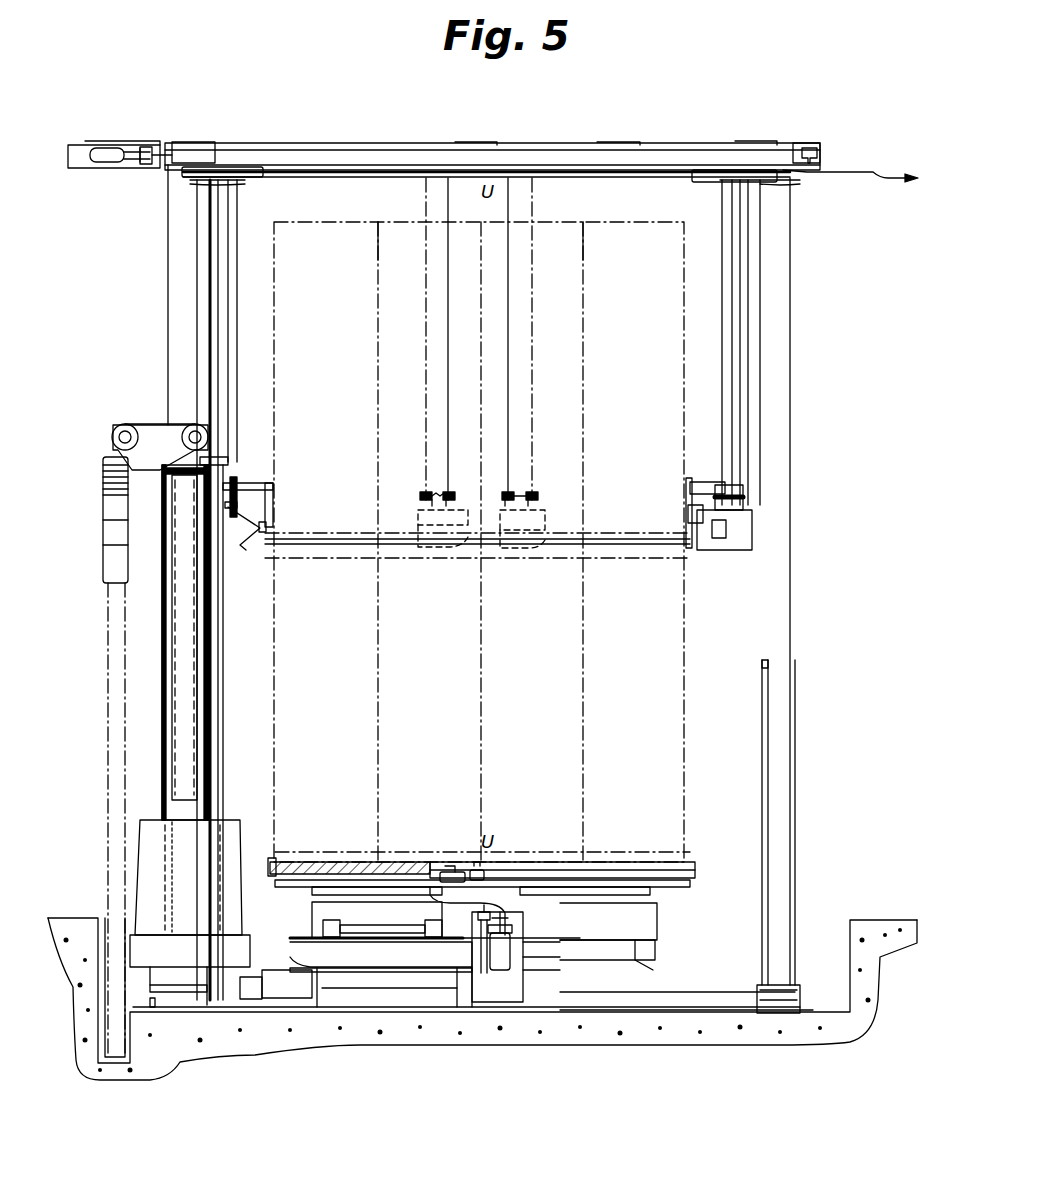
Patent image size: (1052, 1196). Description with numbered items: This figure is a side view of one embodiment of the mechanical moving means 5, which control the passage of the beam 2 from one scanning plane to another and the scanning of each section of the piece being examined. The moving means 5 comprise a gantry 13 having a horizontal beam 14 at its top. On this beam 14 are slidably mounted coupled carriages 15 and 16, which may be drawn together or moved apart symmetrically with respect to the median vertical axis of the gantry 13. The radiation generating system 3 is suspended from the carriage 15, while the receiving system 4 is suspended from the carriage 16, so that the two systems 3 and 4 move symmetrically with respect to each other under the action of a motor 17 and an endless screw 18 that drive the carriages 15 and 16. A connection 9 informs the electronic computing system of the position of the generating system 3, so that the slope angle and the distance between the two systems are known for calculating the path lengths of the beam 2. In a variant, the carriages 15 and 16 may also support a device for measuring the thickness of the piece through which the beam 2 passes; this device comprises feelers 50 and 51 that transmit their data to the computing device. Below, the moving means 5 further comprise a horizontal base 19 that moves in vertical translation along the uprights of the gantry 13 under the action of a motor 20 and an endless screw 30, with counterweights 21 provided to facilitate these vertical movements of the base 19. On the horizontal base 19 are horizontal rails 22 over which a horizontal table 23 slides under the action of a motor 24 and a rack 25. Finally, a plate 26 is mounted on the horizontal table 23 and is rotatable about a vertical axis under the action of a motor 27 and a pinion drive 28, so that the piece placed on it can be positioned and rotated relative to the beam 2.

The beam 2 is at (337, 537).
The radiation generating system 3 is at (250, 552).
The receiving system 4 is at (736, 547).
The mechanical moving means 5 is at (146, 340).
The connection 9 is at (893, 176).
The gantry 13 is at (178, 392).
The horizontal beam 14 is at (388, 160).
The carriage 15 is at (257, 178).
The carriage 16 is at (707, 183).
The motor 17 is at (98, 174).
The endless screw 18 is at (155, 170).
The horizontal base 19 is at (432, 958).
The motor 20 is at (290, 985).
The counterweights 21 is at (112, 568).
The horizontal rails 22 is at (342, 940).
The horizontal table 23 is at (318, 912).
The motor 24 is at (505, 968).
The rack 25 is at (480, 938).
The plate 26 is at (388, 862).
The motor 27 is at (456, 872).
The pinion drive 28 is at (490, 878).
The endless screw 30 is at (226, 806).
The feeler 50 is at (272, 520).
The feeler 51 is at (684, 518).